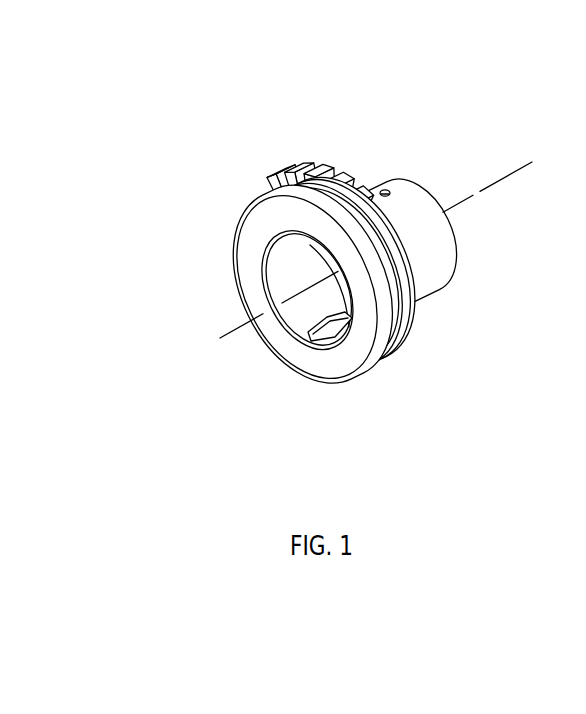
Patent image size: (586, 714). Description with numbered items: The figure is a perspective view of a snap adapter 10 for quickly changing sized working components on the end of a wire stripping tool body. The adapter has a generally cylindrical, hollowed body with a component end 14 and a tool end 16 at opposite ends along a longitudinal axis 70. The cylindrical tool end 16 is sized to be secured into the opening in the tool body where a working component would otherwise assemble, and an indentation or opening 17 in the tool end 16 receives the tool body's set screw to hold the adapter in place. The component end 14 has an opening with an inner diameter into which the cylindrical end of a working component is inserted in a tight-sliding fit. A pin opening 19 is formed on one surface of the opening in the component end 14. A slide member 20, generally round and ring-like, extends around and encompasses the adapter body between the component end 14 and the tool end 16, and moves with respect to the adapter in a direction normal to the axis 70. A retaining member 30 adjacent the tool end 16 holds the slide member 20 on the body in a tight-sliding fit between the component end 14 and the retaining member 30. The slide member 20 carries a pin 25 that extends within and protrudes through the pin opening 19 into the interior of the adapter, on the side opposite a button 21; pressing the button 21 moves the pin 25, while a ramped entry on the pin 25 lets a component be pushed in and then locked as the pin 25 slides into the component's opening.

The snap adapter 10 is at (214, 126).
The component end 14 is at (350, 362).
The tool end 16 is at (423, 190).
The opening 17 is at (386, 189).
The pin opening 19 is at (330, 341).
The slide member 20 is at (392, 342).
The button 21 is at (316, 170).
The pin 25 is at (302, 347).
The retaining member 30 is at (410, 322).
The axis 70 is at (522, 166).